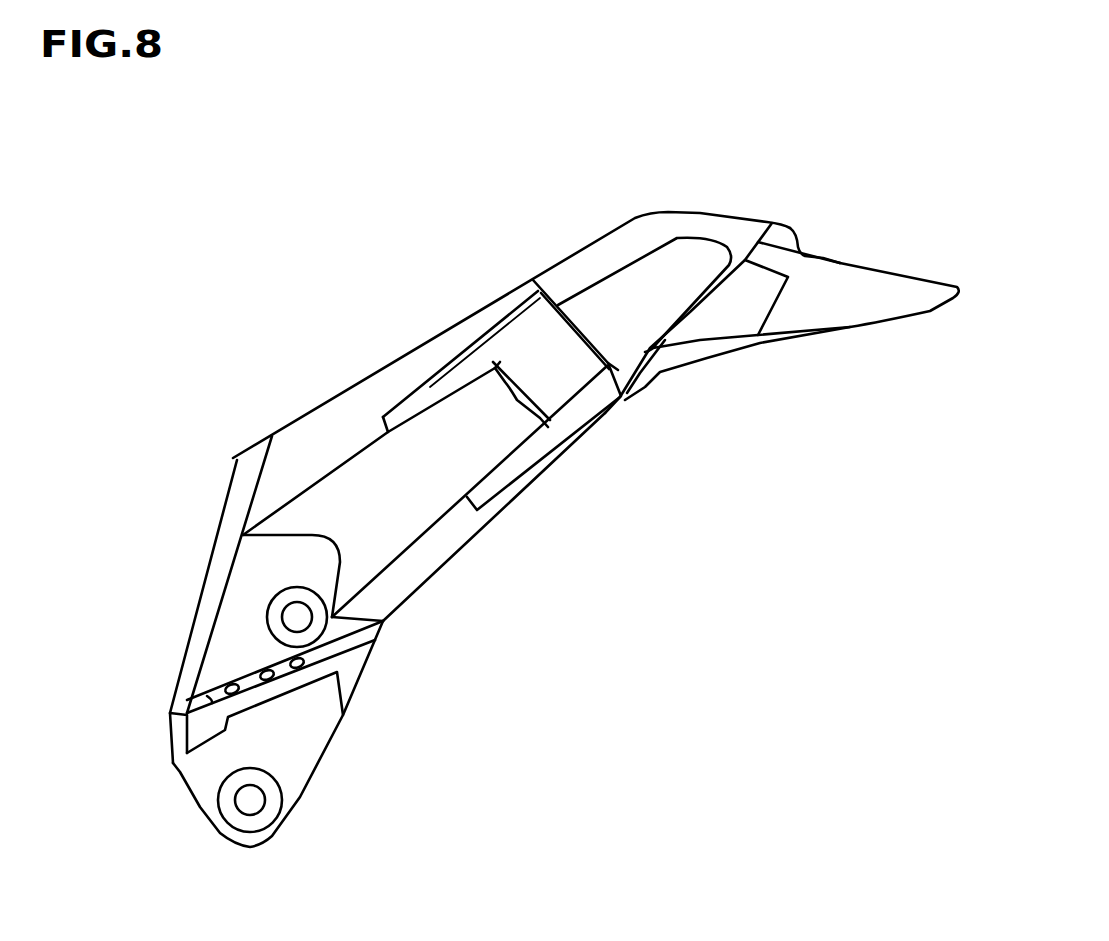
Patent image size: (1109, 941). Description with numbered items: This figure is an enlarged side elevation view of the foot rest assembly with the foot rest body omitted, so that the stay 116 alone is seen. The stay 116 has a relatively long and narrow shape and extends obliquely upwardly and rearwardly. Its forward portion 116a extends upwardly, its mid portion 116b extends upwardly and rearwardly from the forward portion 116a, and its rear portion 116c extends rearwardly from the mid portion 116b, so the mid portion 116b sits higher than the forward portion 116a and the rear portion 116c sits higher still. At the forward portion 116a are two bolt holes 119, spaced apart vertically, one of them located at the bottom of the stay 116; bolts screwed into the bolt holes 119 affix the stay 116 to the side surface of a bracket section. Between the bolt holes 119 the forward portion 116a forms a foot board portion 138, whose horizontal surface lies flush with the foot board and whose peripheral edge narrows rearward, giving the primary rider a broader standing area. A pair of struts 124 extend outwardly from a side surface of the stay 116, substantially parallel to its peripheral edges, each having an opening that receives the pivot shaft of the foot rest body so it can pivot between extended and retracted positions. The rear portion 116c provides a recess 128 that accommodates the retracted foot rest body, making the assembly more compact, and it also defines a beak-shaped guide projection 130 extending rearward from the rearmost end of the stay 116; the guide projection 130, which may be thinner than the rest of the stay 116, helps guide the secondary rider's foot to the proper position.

The stay 116 is at (381, 316).
The forward portion 116a is at (203, 580).
The mid portion 116b is at (473, 537).
The rear portion 116c is at (750, 220).
The bolt holes 119 is at (305, 612).
The struts 124 is at (508, 337).
The recess 128 is at (670, 225).
The guide projection 130 is at (873, 303).
The foot board portion 138 is at (222, 695).